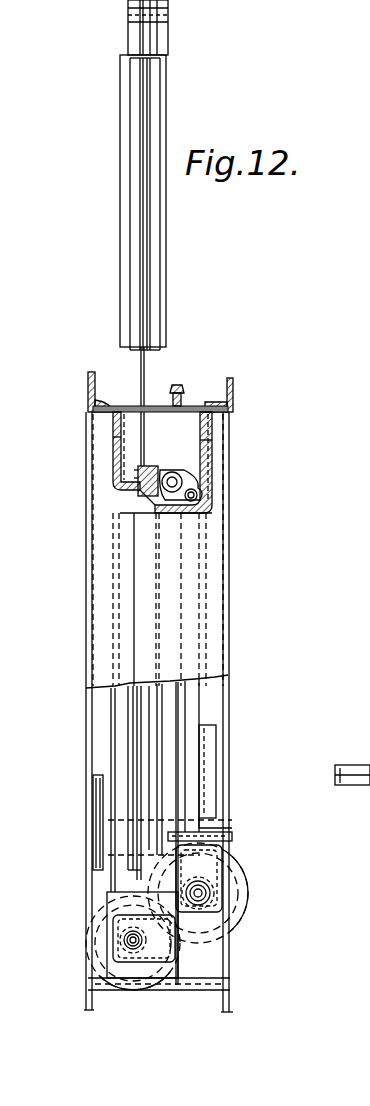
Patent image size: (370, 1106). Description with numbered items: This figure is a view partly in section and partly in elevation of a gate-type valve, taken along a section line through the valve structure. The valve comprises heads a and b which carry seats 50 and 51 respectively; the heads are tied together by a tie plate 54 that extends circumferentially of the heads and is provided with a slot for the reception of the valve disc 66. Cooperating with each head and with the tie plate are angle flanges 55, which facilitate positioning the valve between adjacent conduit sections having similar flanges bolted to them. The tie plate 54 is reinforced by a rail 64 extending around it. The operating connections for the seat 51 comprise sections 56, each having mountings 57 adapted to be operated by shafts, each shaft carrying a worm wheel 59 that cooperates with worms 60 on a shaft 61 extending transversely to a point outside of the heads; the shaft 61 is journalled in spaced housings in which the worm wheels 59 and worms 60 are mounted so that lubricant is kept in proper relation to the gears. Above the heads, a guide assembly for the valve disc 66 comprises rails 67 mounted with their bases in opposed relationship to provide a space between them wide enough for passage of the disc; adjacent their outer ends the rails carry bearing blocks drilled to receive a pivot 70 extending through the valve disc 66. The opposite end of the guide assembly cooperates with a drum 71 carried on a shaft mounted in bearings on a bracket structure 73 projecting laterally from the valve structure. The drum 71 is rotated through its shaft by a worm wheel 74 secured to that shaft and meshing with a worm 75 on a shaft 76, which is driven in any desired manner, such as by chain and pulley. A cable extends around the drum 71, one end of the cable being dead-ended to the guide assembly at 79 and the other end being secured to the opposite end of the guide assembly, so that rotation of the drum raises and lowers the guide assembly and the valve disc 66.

The pivot 70 is at (168, 12).
The rails 67 is at (136, 204).
The valve disc 66 is at (143, 376).
The angle flanges 55 is at (90, 383).
The tie plate 54 is at (158, 404).
The rail 64 is at (183, 392).
The seat 50 is at (118, 470).
The head a is at (113, 437).
The head b is at (212, 440).
The mountings 57 is at (156, 498).
The seat 51 is at (160, 478).
The sections 56 is at (200, 484).
The drum 71 is at (110, 833).
The worm wheel 74 is at (230, 838).
The bracket structure 73 is at (240, 875).
The worm 75 is at (215, 893).
The shaft 76 is at (206, 905).
The shaft 61 is at (130, 940).
The worms 60 is at (110, 956).
The worm wheel 59 is at (163, 979).
The cable dead-end 79 is at (346, 786).